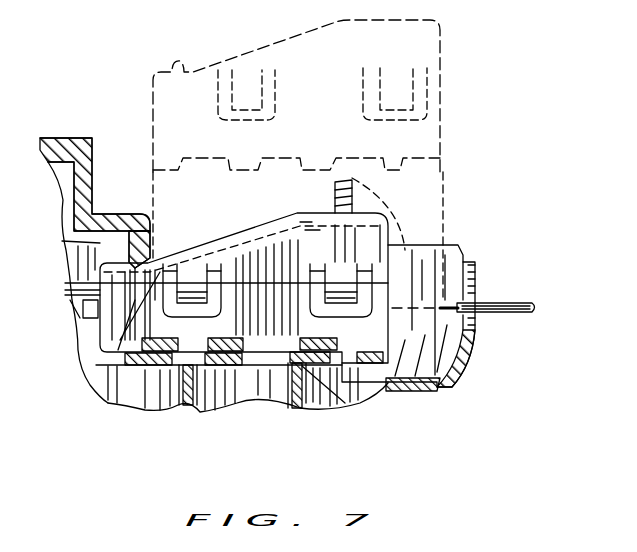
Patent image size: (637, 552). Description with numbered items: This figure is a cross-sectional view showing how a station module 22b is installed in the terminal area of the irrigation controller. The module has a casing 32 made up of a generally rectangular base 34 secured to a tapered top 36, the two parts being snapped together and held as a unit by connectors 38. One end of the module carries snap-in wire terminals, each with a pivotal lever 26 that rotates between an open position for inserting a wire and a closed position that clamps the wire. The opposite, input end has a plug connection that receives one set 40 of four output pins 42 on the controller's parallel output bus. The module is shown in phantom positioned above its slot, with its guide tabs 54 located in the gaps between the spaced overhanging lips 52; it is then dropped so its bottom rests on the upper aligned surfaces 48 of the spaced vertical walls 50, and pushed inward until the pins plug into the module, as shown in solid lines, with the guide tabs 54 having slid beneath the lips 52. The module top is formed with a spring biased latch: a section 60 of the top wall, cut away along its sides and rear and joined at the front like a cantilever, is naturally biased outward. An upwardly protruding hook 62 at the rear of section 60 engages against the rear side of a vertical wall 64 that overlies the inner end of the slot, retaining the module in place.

The station module 22b is at (490, 218).
The pivotal lever 26 is at (360, 200).
The casing 32 is at (293, 410).
The base 34 is at (203, 410).
The tapered top 36 is at (320, 216).
The connectors 38 is at (231, 290).
The set of output pins 40 is at (80, 342).
The output pins 42 is at (88, 370).
The upper aligned surfaces 48 is at (178, 370).
The vertical walls 50 is at (182, 383).
The overhanging lips 52 is at (306, 342).
The guide tabs 54 is at (403, 327).
The top wall section 60 is at (213, 238).
The hook 62 is at (72, 242).
The vertical wall 64 is at (152, 248).